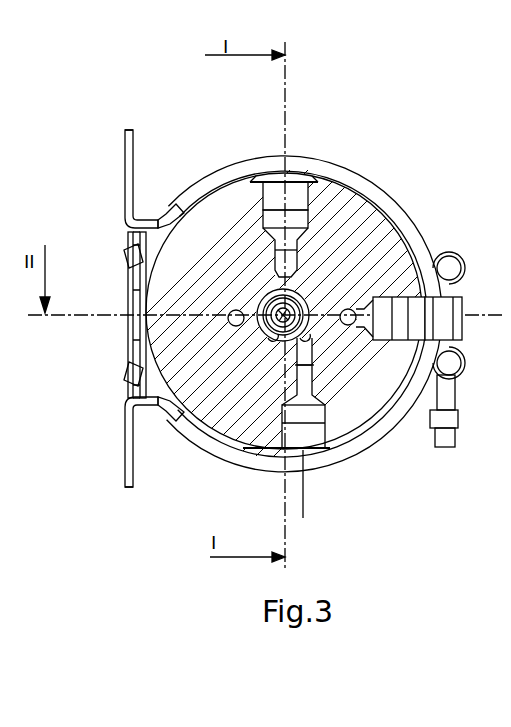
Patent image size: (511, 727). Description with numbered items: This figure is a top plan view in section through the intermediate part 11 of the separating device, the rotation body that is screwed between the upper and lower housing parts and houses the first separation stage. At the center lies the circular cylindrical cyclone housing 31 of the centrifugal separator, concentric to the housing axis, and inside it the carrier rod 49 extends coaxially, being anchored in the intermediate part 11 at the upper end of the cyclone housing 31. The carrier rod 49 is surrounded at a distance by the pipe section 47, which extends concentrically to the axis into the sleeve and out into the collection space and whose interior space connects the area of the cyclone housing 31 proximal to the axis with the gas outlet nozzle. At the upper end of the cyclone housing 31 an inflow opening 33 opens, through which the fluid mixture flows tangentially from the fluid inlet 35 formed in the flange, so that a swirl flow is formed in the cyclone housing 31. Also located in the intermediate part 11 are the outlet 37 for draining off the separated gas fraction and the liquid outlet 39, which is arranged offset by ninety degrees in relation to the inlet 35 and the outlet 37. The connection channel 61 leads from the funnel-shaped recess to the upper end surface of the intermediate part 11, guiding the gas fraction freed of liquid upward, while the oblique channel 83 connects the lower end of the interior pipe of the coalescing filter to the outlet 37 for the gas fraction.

The intermediate part 11 is at (237, 270).
The cyclone housing 31 is at (277, 329).
The inflow opening 33 is at (311, 340).
The fluid inlet 35 is at (310, 447).
The outlet 37 is at (275, 180).
The liquid outlet 39 is at (390, 262).
The pipe section 47 is at (262, 308).
The carrier rod 49 is at (349, 309).
The connection channel 61 is at (237, 327).
The oblique channel 83 is at (400, 210).